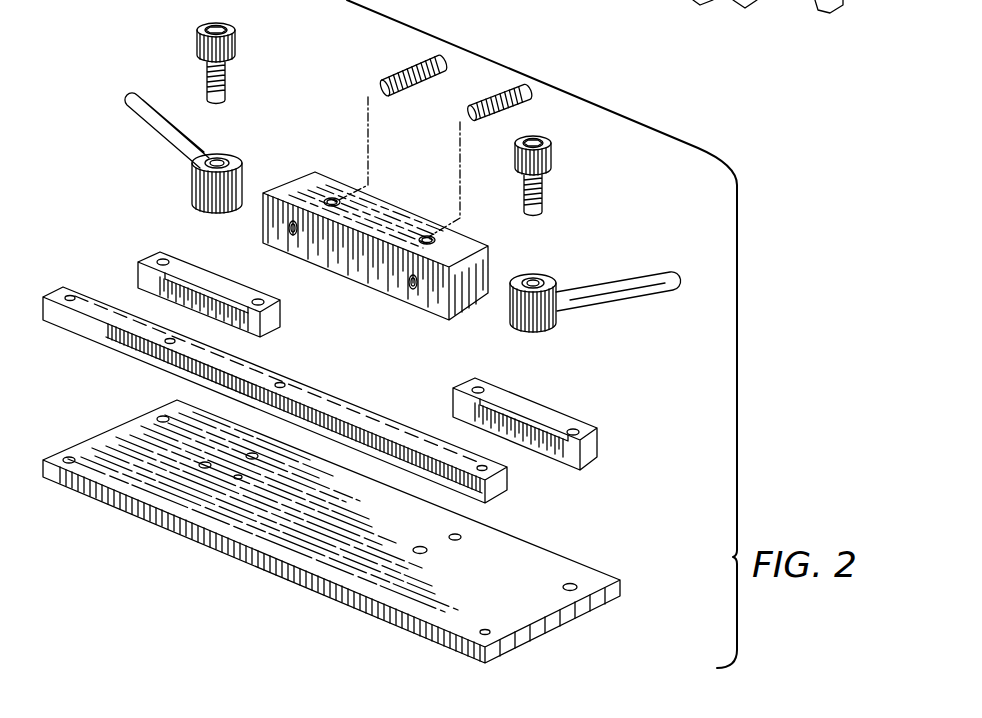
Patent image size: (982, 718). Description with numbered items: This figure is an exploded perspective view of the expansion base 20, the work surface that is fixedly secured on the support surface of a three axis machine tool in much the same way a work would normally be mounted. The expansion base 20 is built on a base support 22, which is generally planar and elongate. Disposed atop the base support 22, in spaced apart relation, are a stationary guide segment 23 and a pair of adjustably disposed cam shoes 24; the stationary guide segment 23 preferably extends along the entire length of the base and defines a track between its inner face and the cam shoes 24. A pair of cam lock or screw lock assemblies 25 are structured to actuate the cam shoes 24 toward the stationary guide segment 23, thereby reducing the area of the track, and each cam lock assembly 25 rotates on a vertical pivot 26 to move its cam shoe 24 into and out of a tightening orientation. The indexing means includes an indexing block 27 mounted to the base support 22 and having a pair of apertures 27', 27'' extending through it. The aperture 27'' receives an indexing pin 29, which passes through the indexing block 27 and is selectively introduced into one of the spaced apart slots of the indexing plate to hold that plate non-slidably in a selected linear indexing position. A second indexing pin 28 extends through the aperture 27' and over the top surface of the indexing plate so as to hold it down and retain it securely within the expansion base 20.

The expansion base 20 is at (48, 515).
The base support 22 is at (272, 540).
The stationary guide segment 23 is at (110, 333).
The cam shoe 24 is at (140, 274).
The cam lock assembly 25 is at (246, 182).
The vertical pivot 26 is at (235, 55).
The indexing block 27 is at (375, 260).
The aperture 27' is at (313, 264).
The aperture 27'' is at (403, 312).
The second indexing pin 28 is at (402, 66).
The indexing pin 29 is at (473, 98).